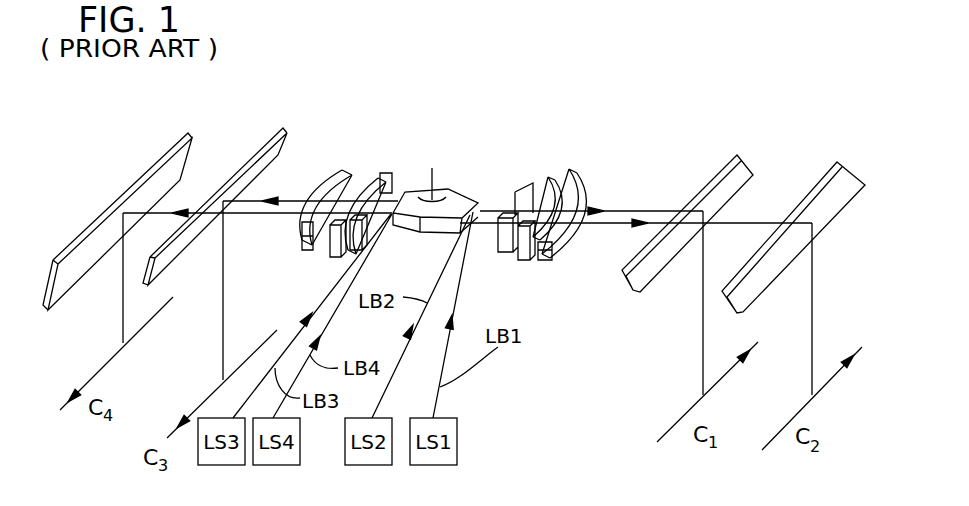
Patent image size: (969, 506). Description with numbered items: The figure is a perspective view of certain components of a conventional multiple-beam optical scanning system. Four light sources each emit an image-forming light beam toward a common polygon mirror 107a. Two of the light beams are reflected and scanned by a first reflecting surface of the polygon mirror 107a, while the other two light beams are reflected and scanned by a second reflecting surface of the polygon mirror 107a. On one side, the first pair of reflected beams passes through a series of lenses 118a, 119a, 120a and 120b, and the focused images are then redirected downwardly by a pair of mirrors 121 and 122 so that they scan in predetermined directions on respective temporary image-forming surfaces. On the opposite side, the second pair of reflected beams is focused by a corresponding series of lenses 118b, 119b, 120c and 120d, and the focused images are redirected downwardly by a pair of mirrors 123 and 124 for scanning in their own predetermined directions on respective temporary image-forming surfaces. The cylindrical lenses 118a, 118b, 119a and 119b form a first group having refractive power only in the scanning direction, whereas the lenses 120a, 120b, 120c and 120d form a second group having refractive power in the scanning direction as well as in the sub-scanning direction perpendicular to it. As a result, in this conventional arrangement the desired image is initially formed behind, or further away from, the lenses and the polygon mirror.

The polygon mirror 107a is at (462, 203).
The cylindrical lens 118a is at (526, 190).
The cylindrical lens 118b is at (387, 190).
The cylindrical lens 119a is at (550, 182).
The cylindrical lens 119b is at (376, 178).
The lens 120a is at (575, 178).
The lens 120b is at (550, 260).
The lens 120c is at (345, 173).
The lens 120d is at (312, 250).
The mirror 121 is at (733, 177).
The mirror 122 is at (848, 177).
The mirror 123 is at (283, 143).
The mirror 124 is at (186, 163).